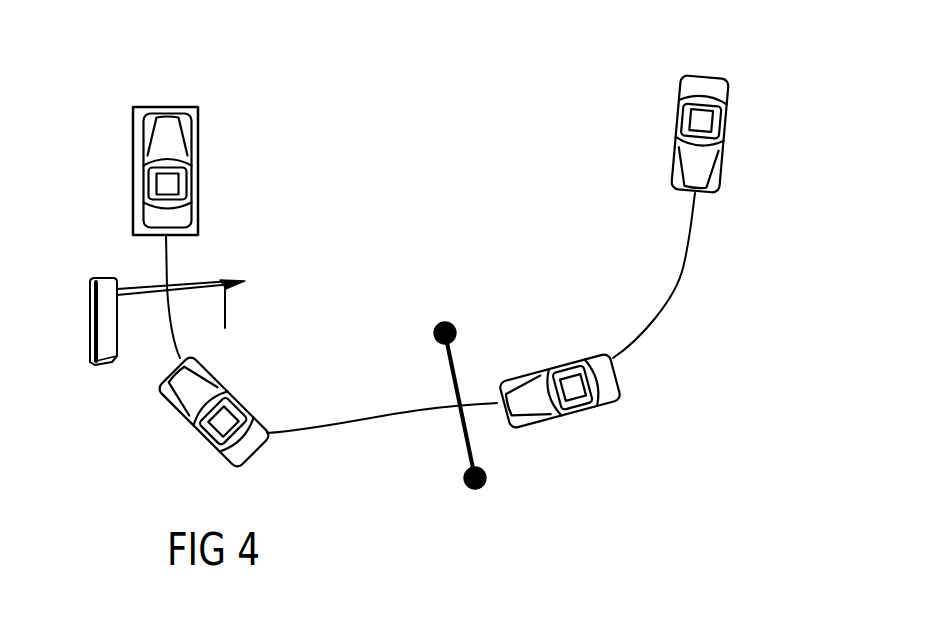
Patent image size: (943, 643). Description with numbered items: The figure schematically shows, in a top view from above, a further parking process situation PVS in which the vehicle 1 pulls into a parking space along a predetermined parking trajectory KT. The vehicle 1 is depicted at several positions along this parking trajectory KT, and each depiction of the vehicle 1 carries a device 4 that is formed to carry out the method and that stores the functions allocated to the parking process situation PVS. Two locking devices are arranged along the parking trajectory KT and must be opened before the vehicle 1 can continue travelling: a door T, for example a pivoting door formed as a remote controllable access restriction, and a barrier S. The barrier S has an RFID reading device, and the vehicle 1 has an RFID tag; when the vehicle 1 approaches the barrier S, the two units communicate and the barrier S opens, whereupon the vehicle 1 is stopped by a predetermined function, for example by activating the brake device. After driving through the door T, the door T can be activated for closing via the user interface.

The vehicle 1 is at (150, 147).
The device 4 is at (168, 184).
The barrier S is at (233, 286).
The door T is at (447, 322).
The parking trajectory KT is at (683, 272).
The parking process situation PVS is at (531, 110).